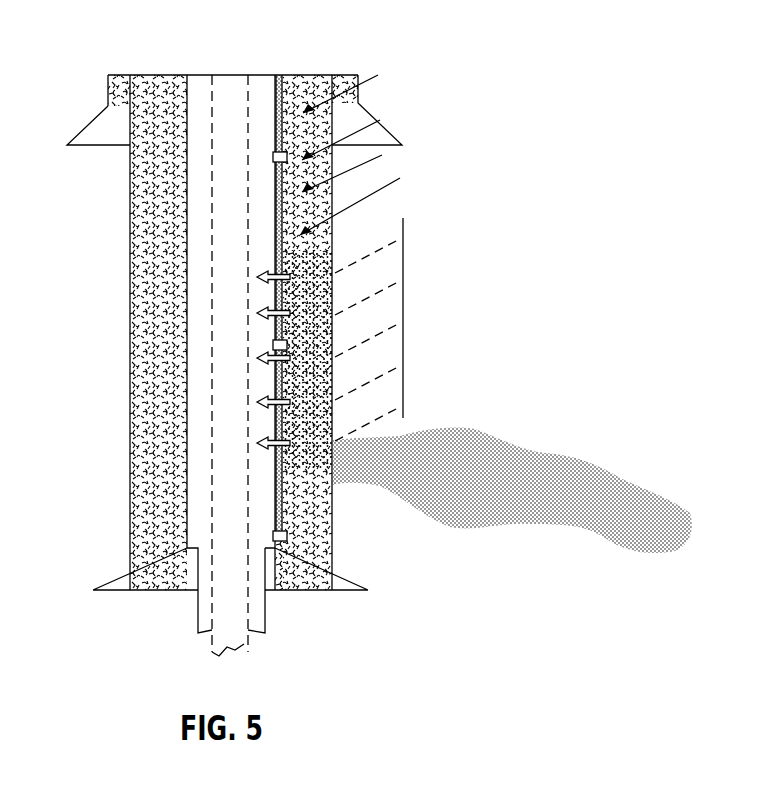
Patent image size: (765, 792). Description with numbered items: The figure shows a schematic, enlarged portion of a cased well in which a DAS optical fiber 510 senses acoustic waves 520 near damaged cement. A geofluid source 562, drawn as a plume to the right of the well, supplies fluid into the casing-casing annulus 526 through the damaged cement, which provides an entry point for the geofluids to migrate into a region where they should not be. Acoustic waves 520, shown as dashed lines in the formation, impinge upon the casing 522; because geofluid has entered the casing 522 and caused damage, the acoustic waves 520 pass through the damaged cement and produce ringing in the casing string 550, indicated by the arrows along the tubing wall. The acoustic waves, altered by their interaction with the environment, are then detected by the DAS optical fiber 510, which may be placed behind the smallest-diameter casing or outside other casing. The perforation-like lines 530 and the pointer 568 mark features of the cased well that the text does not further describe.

The tubing string 510 is at (276, 76).
The subterranean formation 520 is at (373, 307).
The casing 522 is at (130, 500).
The cement sheath 526 is at (311, 75).
The perforations 530 is at (333, 178).
The fluid flow 550 is at (264, 389).
The fracture plume 562 is at (498, 470).
The lower zone 568 is at (340, 550).